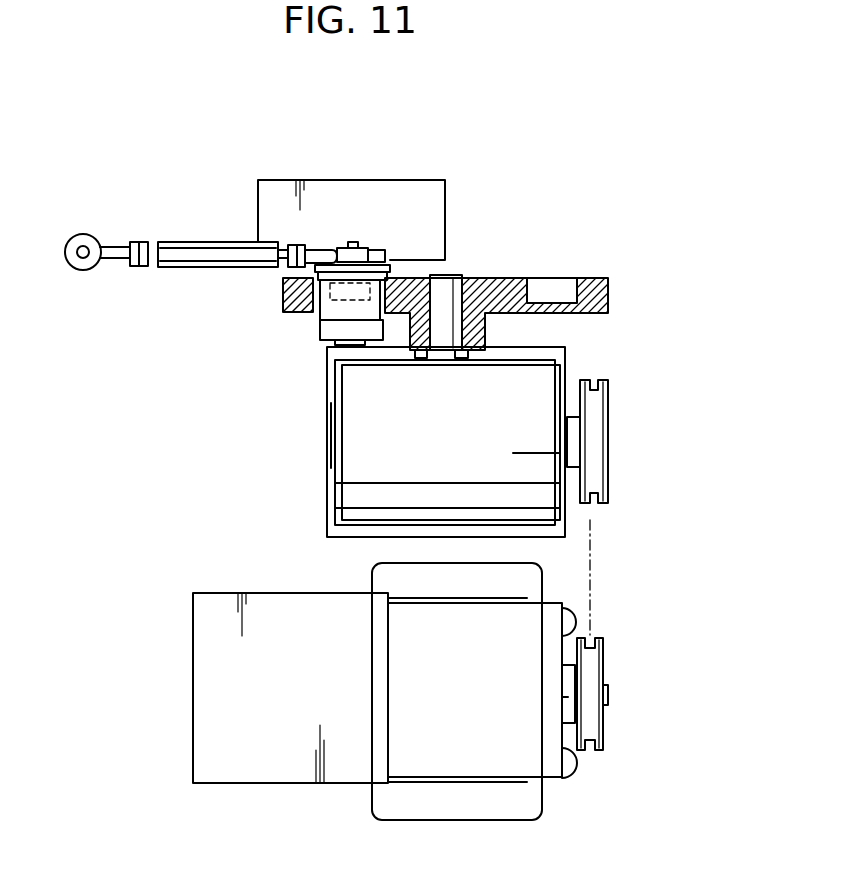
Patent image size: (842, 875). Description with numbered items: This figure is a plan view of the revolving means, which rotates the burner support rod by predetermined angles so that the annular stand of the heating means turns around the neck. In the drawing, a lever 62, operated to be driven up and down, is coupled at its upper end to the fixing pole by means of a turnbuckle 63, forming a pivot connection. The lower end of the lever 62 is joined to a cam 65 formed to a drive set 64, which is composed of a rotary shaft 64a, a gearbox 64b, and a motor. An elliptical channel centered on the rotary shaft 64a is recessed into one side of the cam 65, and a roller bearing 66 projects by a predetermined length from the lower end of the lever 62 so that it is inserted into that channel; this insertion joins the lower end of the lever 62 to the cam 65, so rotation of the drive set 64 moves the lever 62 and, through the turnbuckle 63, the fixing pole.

The lever 62 is at (390, 260).
The turnbuckle 63 is at (218, 255).
The drive set 64 is at (465, 277).
The rotary shaft 64a is at (358, 425).
The gearbox 64b is at (217, 607).
The cam 65 is at (556, 284).
The roller bearing 66 is at (348, 290).